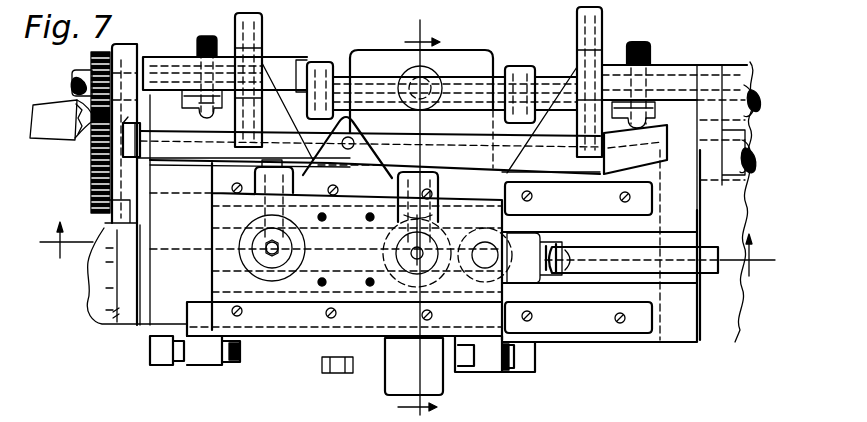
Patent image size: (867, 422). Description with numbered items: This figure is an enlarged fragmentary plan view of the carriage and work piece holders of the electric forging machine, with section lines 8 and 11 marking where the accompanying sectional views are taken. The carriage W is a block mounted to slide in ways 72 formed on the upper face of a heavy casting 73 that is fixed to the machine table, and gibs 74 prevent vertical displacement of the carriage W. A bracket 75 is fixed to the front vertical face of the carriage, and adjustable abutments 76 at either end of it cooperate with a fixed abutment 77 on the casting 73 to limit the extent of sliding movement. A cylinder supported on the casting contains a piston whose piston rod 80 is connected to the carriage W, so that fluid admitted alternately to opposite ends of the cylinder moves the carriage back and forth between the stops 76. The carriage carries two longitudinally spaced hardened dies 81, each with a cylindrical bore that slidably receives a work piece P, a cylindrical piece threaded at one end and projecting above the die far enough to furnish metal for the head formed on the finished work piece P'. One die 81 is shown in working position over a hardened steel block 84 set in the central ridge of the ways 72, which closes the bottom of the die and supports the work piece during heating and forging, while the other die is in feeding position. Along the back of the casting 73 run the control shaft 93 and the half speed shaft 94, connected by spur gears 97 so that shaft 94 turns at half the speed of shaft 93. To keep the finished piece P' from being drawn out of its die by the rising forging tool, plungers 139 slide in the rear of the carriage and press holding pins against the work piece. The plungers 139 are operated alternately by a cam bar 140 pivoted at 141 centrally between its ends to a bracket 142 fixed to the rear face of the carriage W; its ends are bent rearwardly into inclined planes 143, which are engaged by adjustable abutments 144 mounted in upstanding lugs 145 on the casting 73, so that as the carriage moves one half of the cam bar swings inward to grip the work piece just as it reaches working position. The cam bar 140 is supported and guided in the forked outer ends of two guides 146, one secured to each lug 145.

The section line 8 is at (404, 249).
The section line 11 is at (419, 214).
The ways 72 is at (598, 296).
The heavy casting 73 is at (154, 328).
The gibs 74 is at (576, 352).
The bracket 75 is at (296, 320).
The adjustable abutments 76 is at (226, 360).
The fixed abutment 77 is at (414, 366).
The piston rod 80 is at (612, 258).
The hardened dies 81 is at (280, 268).
The hardened steel block 84 is at (482, 268).
The control shaft 93 is at (74, 80).
The half speed shaft 94 is at (90, 152).
The spur gears 97 is at (70, 108).
The plungers 139 is at (306, 160).
The cam bar 140 is at (403, 149).
The pivotal connection 141 is at (356, 138).
The bracket 142 is at (440, 186).
The inclined planes 143 is at (60, 112).
The adjustable abutments 144 is at (196, 108).
The upstanding lugs 145 is at (178, 62).
The guides 146 is at (240, 142).
The work piece P is at (370, 256).
The finished work piece P' is at (235, 247).
The carriage W is at (226, 280).